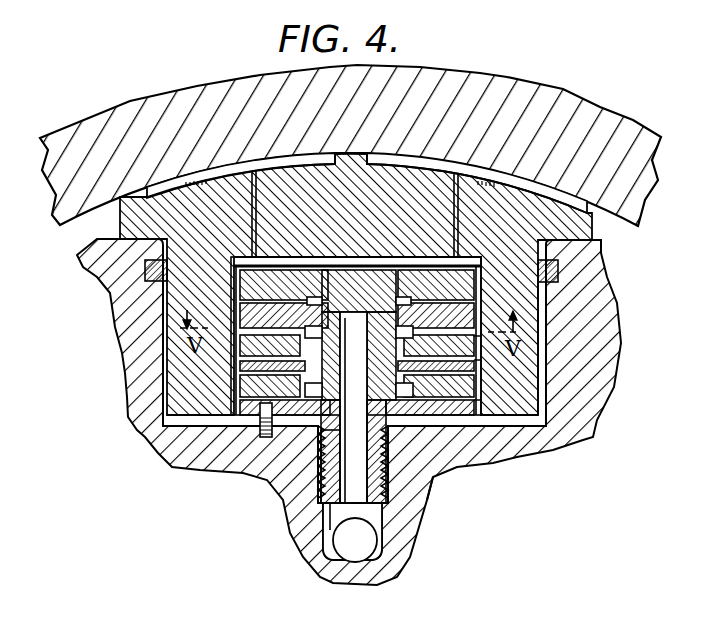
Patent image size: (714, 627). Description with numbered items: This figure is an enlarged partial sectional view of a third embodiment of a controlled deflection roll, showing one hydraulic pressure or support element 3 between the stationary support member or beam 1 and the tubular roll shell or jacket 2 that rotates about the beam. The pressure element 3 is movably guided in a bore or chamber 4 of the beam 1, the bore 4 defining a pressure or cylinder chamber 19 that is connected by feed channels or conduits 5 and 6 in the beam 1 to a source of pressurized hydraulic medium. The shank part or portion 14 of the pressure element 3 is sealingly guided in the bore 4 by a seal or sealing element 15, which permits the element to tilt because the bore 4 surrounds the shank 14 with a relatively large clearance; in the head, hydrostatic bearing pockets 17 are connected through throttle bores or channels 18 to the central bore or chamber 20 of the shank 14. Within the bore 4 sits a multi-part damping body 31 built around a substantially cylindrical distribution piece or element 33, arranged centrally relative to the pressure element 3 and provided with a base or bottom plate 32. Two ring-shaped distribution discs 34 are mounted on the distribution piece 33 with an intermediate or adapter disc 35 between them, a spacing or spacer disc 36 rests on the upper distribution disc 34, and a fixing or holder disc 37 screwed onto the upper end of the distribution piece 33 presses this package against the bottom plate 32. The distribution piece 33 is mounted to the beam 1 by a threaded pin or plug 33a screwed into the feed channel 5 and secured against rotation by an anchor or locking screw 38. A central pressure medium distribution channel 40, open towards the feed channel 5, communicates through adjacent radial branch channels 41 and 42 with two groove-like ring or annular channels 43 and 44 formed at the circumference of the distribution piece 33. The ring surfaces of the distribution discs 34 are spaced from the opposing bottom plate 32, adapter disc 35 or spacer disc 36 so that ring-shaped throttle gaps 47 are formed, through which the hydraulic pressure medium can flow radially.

The stationary support member or beam 1 is at (157, 450).
The tubular roll shell or jacket 2 is at (620, 125).
The hydraulic pressure or support element 3 is at (598, 226).
The bore or chamber 4 is at (543, 362).
The feed channel or conduit 5 is at (383, 537).
The feed channel or conduit 6 is at (343, 555).
The shank part or portion 14 is at (542, 320).
The seal or sealing element 15 is at (560, 270).
The hydrostatic bearing pockets 17 is at (268, 168).
The throttle bore or channel 18 is at (464, 200).
The pressure or cylinder chamber 19 is at (520, 425).
The central bore or chamber 20 is at (482, 289).
The multi-part damping body 31 is at (242, 425).
The base or bottom plate 32 is at (292, 420).
The cylindrical distribution piece or element 33 is at (373, 310).
The threaded pin or plug 33a is at (322, 468).
The ring-shaped or annular distribution discs 34 is at (240, 344).
The intermediate or adapter disc 35 is at (240, 365).
The spacing or spacer disc 36 is at (240, 294).
The fixing or holder disc 37 is at (114, 291).
The anchor or locking screw 38 is at (264, 437).
The central pressure medium distribution channel 40 is at (390, 500).
The radial branch channel 41 is at (400, 438).
The radial branch channel 42 is at (352, 318).
The groove-like ring or annular channel 43 is at (440, 468).
The groove-like ring or annular channel 44 is at (383, 318).
The ring-shaped throttle gap 47 is at (414, 400).